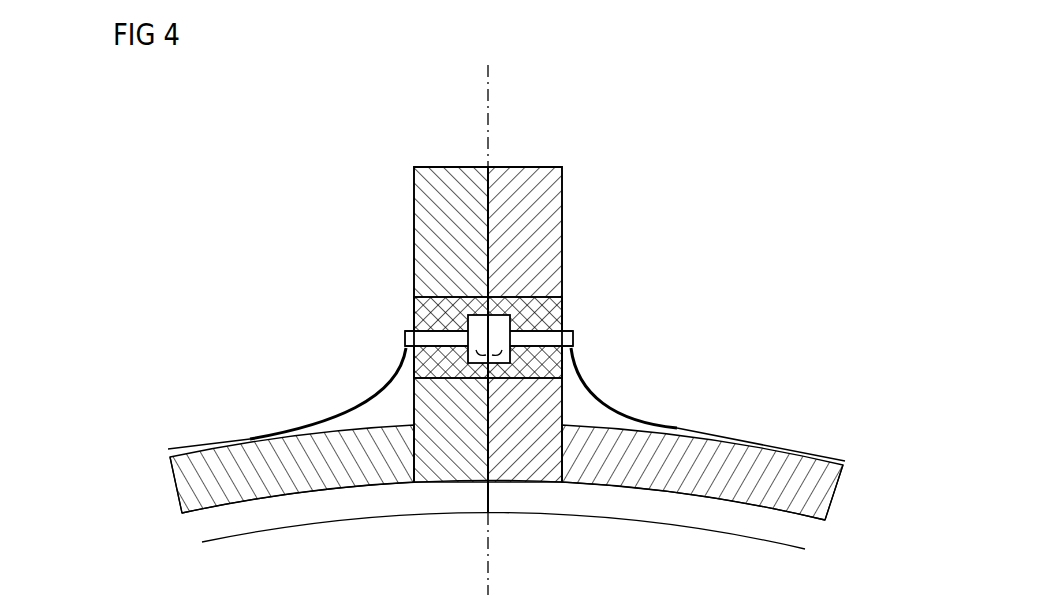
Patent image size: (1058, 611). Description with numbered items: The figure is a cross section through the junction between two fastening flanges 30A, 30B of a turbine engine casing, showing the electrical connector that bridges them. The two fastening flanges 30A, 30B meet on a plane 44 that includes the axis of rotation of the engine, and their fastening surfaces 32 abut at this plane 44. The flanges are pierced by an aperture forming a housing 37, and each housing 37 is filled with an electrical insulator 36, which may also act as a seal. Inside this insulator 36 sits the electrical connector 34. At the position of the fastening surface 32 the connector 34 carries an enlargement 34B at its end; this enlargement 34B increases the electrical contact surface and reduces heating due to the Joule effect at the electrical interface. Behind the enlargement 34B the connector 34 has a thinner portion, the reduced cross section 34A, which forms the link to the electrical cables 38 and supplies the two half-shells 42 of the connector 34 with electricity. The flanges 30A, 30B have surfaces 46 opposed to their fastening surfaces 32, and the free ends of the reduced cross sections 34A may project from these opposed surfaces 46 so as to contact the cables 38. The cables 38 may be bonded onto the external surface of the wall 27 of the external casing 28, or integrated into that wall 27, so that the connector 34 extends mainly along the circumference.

The wall 27 is at (757, 458).
The external casing 28 is at (190, 247).
The fastening flange 30A is at (547, 193).
The fastening flange 30B is at (435, 193).
The fastening surface 32 is at (486, 192).
The electrical connector 34 is at (270, 268).
The reduced cross section 34A is at (403, 331).
The enlargement 34B is at (403, 360).
The electrical insulator 36 is at (415, 307).
The housing 37 is at (568, 311).
The electrical cable 38 is at (198, 443).
The half-shell 42 is at (202, 483).
The plane 44 is at (488, 547).
The opposed surface 46 is at (414, 237).